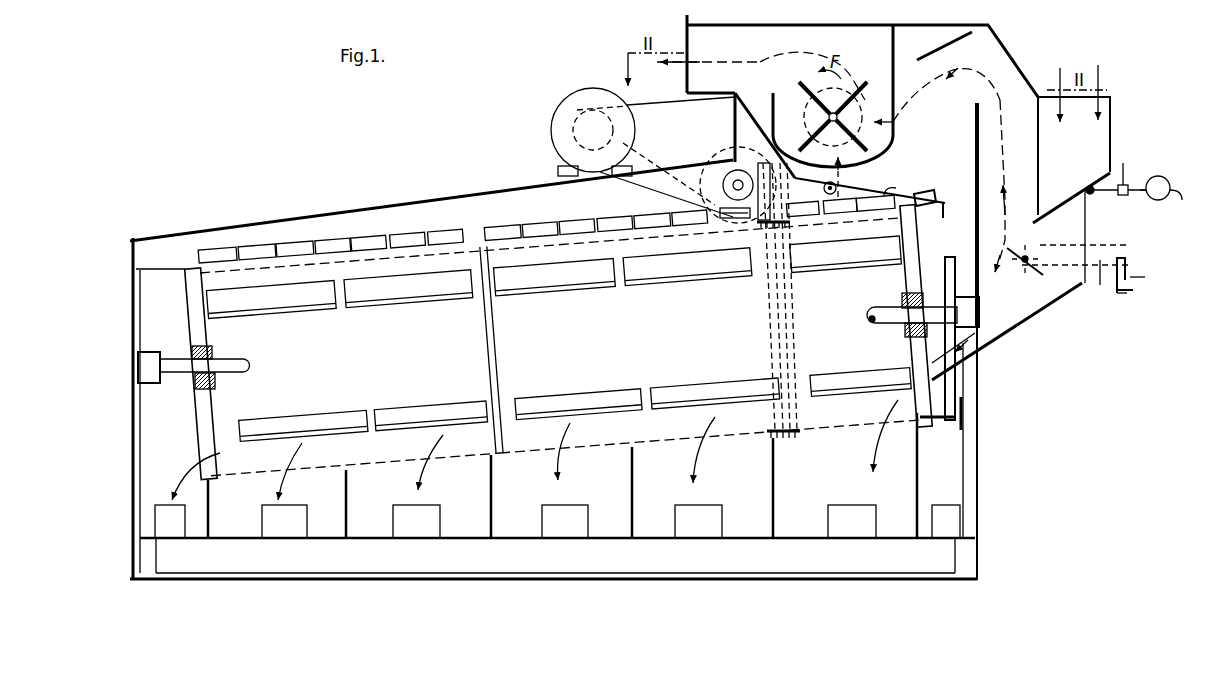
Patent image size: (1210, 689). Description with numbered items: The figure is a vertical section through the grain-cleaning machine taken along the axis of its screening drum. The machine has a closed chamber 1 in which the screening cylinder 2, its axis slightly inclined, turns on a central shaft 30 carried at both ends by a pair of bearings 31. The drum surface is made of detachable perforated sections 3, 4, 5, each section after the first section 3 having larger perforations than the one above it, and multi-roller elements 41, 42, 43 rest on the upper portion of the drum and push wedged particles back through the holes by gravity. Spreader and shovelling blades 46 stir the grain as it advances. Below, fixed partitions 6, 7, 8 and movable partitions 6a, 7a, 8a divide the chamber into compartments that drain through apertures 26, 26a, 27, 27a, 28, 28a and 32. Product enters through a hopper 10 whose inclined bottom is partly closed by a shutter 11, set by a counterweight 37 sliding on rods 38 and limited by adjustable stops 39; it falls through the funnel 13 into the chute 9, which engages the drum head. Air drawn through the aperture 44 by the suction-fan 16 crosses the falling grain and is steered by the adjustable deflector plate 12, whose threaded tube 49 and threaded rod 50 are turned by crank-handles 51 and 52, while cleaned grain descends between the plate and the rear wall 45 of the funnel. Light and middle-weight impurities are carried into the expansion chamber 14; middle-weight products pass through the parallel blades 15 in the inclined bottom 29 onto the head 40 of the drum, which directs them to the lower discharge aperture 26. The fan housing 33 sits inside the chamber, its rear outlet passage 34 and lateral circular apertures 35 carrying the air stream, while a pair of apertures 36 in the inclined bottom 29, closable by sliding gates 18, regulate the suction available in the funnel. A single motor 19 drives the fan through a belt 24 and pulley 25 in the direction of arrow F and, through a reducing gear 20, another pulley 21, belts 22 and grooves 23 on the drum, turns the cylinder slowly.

The closed chamber 1 is at (436, 199).
The screening cylinder 2 is at (638, 241).
The first perforated section 3 is at (850, 419).
The perforated section 4 is at (586, 443).
The perforated section 5 is at (357, 462).
The fixed partition 6 is at (918, 488).
The movable partition 6a is at (774, 495).
The fixed partition 7 is at (492, 507).
The movable partition 7a is at (633, 500).
The fixed partition 8 is at (209, 517).
The movable partition 8a is at (347, 508).
The chute 9 is at (1007, 331).
The hopper 10 is at (1074, 156).
The shutter 11 is at (1050, 210).
The deflector plate 12 is at (1040, 272).
The funnel 13 is at (1007, 186).
The expansion chamber 14 is at (946, 108).
The parallel blades 15 is at (924, 193).
The suction-fan 16 is at (860, 90).
The sliding gates 18 is at (858, 187).
The motor 19 is at (606, 83).
The reducing gear 20 is at (722, 186).
The pulley 21 is at (763, 160).
The belts 22 is at (792, 300).
The grooves 23 is at (804, 434).
The belt 24 is at (678, 103).
The pulley 25 is at (853, 88).
The lower discharge aperture 26 is at (946, 521).
The aperture 26a is at (852, 521).
The aperture 27 is at (698, 521).
The aperture 27a is at (565, 521).
The aperture 28 is at (416, 521).
The aperture 28a is at (284, 521).
The inclined bottom 29 is at (897, 182).
The central shaft 30 is at (235, 360).
The bearings 31 is at (155, 360).
The aperture 32 is at (170, 521).
The fan housing 33 is at (895, 75).
The outlet passage 34 is at (761, 76).
The circular apertures 35 is at (804, 120).
The apertures 36 is at (824, 189).
The counterweight 37 is at (1160, 180).
The rods 38 is at (1182, 204).
The adjustable stops 39 is at (1127, 196).
The head 40 is at (940, 421).
The multi-roller element 41 is at (878, 215).
The multi-roller element 42 is at (510, 242).
The multi-roller element 43 is at (213, 262).
The aperture 44 is at (1086, 232).
The rear wall 45 is at (977, 245).
The spreader and shovelling blades 46 is at (413, 300).
The threaded tube 49 is at (1108, 278).
The threaded rod 50 is at (1132, 268).
The crank-handle 51 is at (1122, 296).
The crank-handle 52 is at (1146, 278).